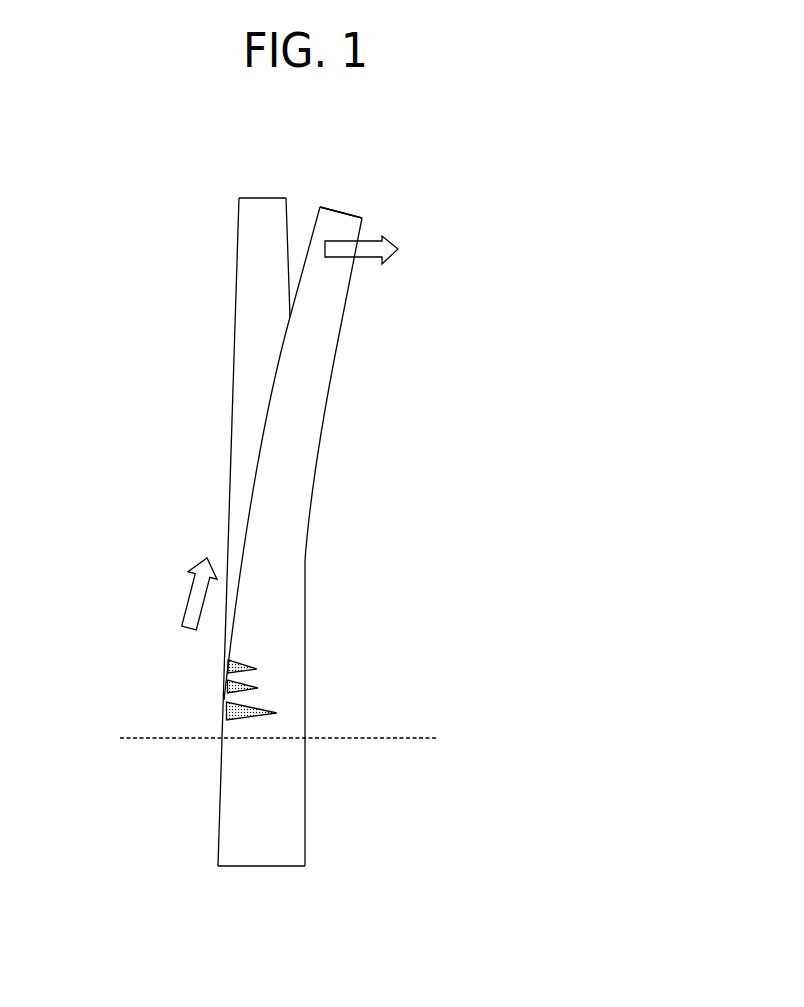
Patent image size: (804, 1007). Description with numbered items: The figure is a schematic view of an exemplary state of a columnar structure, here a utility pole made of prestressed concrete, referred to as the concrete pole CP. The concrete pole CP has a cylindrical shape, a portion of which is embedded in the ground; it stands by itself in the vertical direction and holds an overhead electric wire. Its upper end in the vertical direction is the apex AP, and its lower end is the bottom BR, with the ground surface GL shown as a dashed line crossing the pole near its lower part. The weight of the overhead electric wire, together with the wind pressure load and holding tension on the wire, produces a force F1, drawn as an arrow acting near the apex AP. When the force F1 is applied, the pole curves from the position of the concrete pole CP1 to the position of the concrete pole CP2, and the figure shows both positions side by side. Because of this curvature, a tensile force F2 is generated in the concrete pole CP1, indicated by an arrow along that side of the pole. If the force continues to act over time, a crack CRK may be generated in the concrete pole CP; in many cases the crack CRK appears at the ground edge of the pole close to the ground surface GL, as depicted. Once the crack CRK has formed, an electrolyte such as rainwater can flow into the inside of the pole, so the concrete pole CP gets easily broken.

The apex AP is at (345, 203).
The force F1 is at (390, 241).
The tensile force F2 is at (188, 595).
The concrete pole CP is at (108, 385).
The concrete pole (first position) CP1 is at (243, 407).
The concrete pole (curved position) CP2 is at (270, 486).
The crack CRK is at (220, 660).
The ground surface GL is at (392, 738).
The bottom BR is at (263, 867).